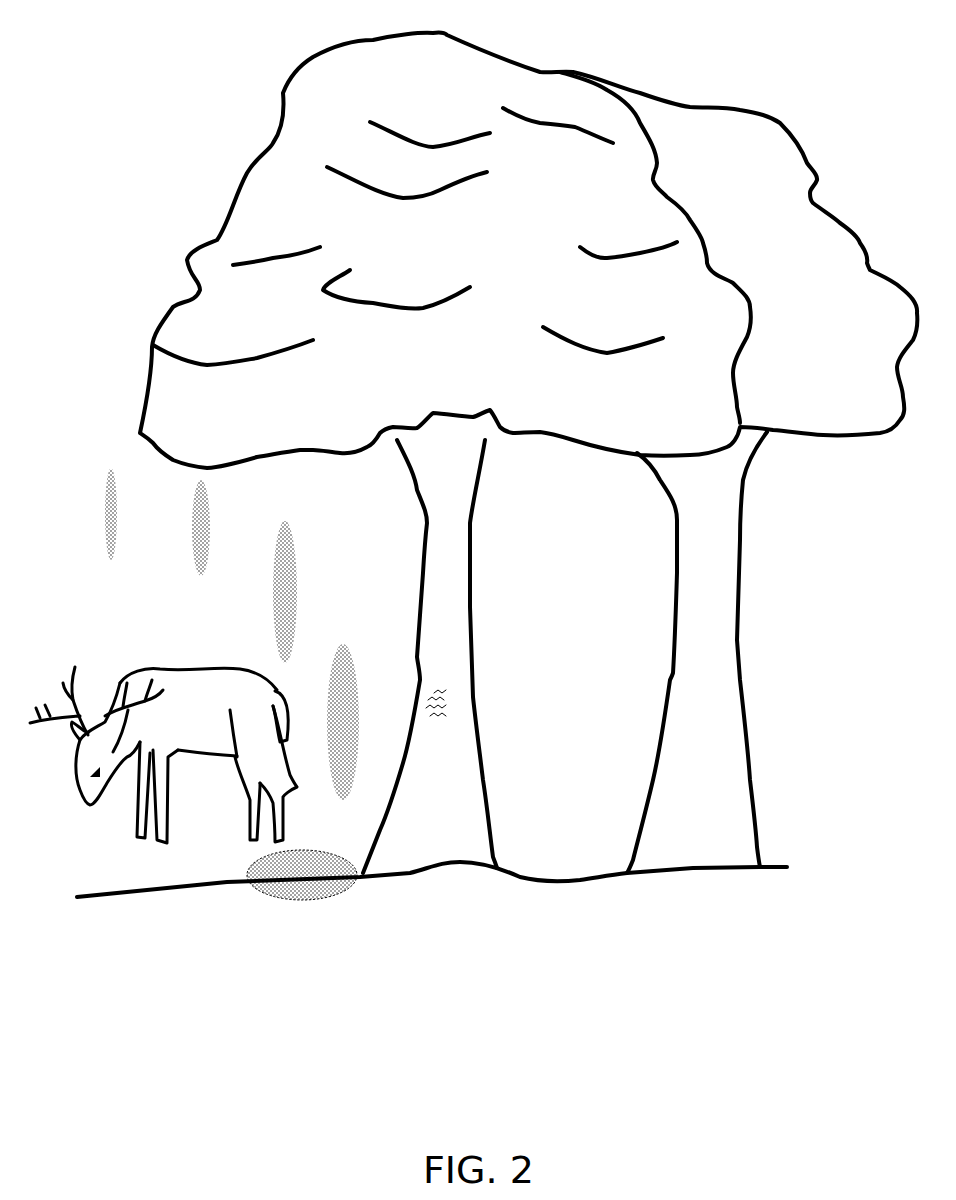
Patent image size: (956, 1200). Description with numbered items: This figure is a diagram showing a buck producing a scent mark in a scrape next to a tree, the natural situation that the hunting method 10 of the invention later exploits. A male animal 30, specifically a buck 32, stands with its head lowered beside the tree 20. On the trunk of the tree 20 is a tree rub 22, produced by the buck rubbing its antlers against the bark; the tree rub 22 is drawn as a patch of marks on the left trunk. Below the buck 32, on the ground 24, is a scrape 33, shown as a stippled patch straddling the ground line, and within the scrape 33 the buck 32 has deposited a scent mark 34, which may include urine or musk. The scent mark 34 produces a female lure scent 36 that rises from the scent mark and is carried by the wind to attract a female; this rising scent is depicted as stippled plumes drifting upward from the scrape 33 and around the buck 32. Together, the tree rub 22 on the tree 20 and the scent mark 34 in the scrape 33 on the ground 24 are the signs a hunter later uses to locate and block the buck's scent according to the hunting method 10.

The hunting method 10 is at (176, 552).
The tree 20 is at (320, 103).
The tree rub 22 is at (447, 688).
The ground 24 is at (250, 917).
The male animal 30 is at (117, 687).
The buck 32 is at (200, 693).
The scrape 33 is at (313, 880).
The scent mark 34 is at (343, 887).
The female lure scent 36 is at (350, 688).